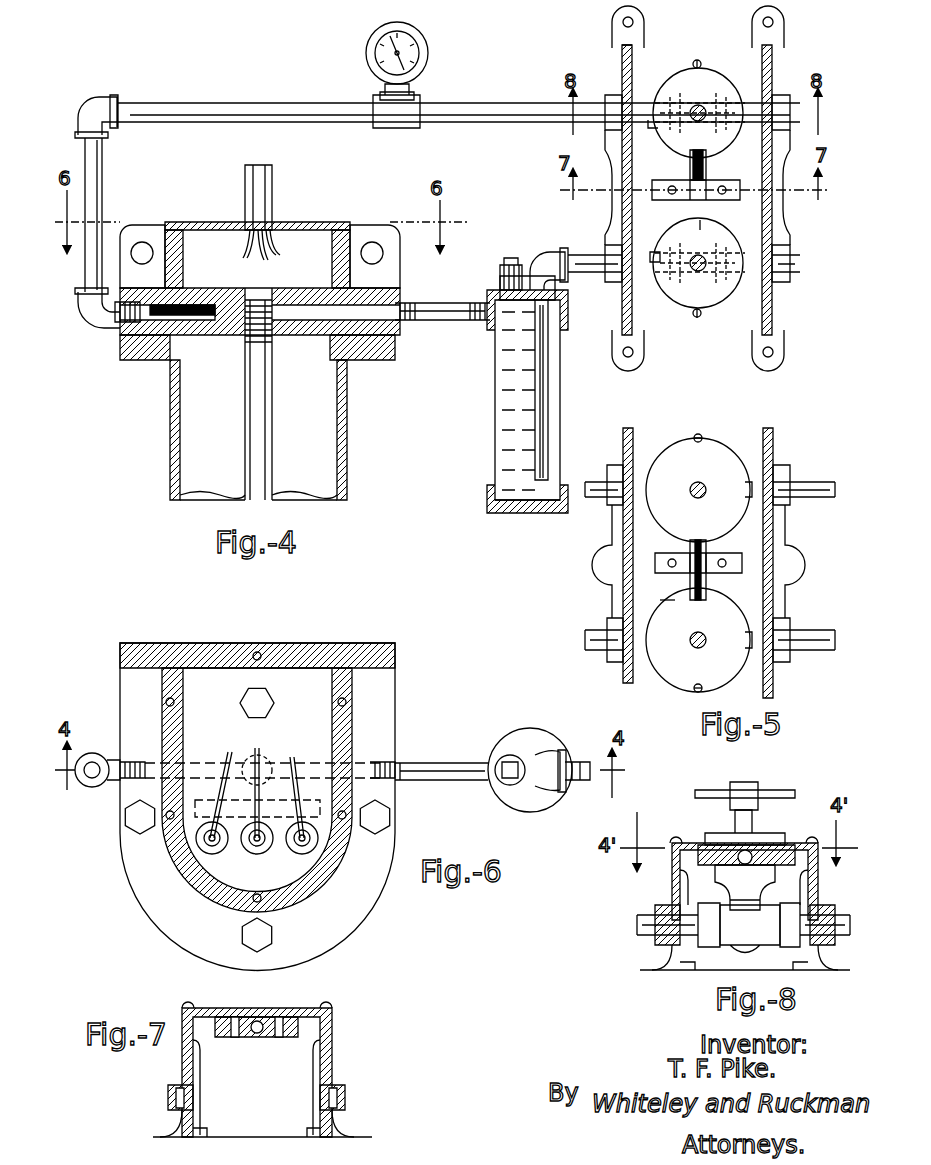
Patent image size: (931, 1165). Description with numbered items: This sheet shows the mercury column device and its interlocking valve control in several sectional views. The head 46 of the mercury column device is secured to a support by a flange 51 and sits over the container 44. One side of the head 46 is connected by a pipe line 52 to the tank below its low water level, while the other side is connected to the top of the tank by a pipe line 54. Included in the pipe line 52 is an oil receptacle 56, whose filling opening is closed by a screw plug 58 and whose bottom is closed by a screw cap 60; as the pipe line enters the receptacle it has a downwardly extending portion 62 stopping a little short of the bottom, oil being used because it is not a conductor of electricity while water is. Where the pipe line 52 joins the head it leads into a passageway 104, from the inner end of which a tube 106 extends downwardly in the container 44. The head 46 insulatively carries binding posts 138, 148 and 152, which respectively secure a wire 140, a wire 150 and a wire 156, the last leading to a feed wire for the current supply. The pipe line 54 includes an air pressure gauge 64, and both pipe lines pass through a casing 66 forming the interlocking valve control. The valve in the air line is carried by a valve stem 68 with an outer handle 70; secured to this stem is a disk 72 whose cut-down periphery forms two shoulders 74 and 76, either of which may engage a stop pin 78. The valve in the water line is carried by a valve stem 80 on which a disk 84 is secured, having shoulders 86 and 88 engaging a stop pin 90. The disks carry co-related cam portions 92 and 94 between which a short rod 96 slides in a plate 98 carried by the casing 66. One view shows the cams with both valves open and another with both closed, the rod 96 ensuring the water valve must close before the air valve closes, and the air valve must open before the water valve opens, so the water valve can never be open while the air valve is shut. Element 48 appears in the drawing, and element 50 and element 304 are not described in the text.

In FIG. 4, the container 44 is at (348, 440).
In FIG. 4, the head 46 is at (400, 295).
In FIG. 6, the head 46 is at (355, 905).
In FIG. 6, the nuts 48 is at (130, 826).
In FIG. 4, the flange 50 is at (395, 354).
In FIG. 4, the flange 51 is at (367, 230).
In FIG. 6, the flange 51 is at (310, 655).
In FIG. 4, the pipe line 52 is at (455, 303).
In FIG. 5, the pipe line 52 is at (596, 630).
In FIG. 6, the pipe line 52 is at (437, 763).
In FIG. 5, the pipe line 54 is at (815, 482).
In FIG. 6, the pipe line 54 is at (92, 753).
In FIG. 8, the pipe line 54 is at (645, 928).
In FIG. 4, the oil receptacle 56 is at (490, 452).
In FIG. 6, the oil receptacle 56 is at (540, 740).
In FIG. 4, the screw plug 58 is at (511, 265).
In FIG. 6, the screw plug 58 is at (508, 755).
In FIG. 4, the screw cap 60 is at (525, 513).
In FIG. 4, the downwardly extending portion 62 is at (548, 408).
In FIG. 4, the air pressure gauge 64 is at (428, 53).
In FIG. 4, the casing 66 is at (622, 60).
In FIG. 5, the casing 66 is at (773, 442).
In FIG. 7, the casing 66 is at (332, 1054).
In FIG. 8, the casing 66 is at (672, 893).
In FIG. 4, the valve stem 68 is at (704, 107).
In FIG. 5, the valve stem 68 is at (704, 484).
In FIG. 8, the valve stem 68 is at (755, 822).
In FIG. 8, the handle 70 is at (790, 790).
In FIG. 4, the disk 72 is at (672, 148).
In FIG. 5, the disk 72 is at (665, 452).
In FIG. 8, the disk 72 is at (708, 865).
In FIG. 4, the shoulder 74 is at (700, 60).
In FIG. 5, the shoulder 74 is at (748, 480).
In FIG. 4, the shoulder 76 is at (648, 128).
In FIG. 5, the shoulder 76 is at (698, 434).
In FIG. 4, the stop pin 78 is at (693, 64).
In FIG. 5, the stop pin 78 is at (703, 437).
In FIG. 4, the valve stem 80 is at (694, 270).
In FIG. 5, the valve stem 80 is at (694, 648).
In FIG. 4, the disk 84 is at (722, 306).
In FIG. 5, the disk 84 is at (730, 604).
In FIG. 4, the shoulder 86 is at (708, 322).
In FIG. 5, the shoulder 86 is at (750, 650).
In FIG. 4, the shoulder 88 is at (655, 250).
In FIG. 5, the shoulder 88 is at (694, 690).
In FIG. 4, the stop pin 90 is at (694, 316).
In FIG. 5, the stop pin 90 is at (703, 690).
In FIG. 4, the cam portion 92 is at (712, 182).
In FIG. 5, the cam portion 92 is at (672, 528).
In FIG. 4, the cam portion 94 is at (724, 230).
In FIG. 5, the cam portion 94 is at (664, 610).
In FIG. 4, the short rod 96 is at (702, 170).
In FIG. 5, the short rod 96 is at (706, 548).
In FIG. 7, the short rod 96 is at (258, 1037).
In FIG. 4, the plate 98 is at (745, 186).
In FIG. 5, the plate 98 is at (745, 562).
In FIG. 7, the plate 98 is at (226, 1037).
In FIG. 4, the passageway 104 is at (286, 322).
In FIG. 4, the tube 106 is at (348, 480).
In FIG. 6, the binding post 138 is at (212, 854).
In FIG. 4, the wire 140 is at (243, 254).
In FIG. 6, the wire 140 is at (226, 755).
In FIG. 6, the binding post 148 is at (300, 848).
In FIG. 4, the wire 150 is at (278, 250).
In FIG. 6, the wire 150 is at (294, 757).
In FIG. 6, the binding post 152 is at (257, 854).
In FIG. 4, the wire 156 is at (266, 259).
In FIG. 6, the wire 156 is at (260, 745).
In FIG. 4, the cable 304 is at (272, 178).